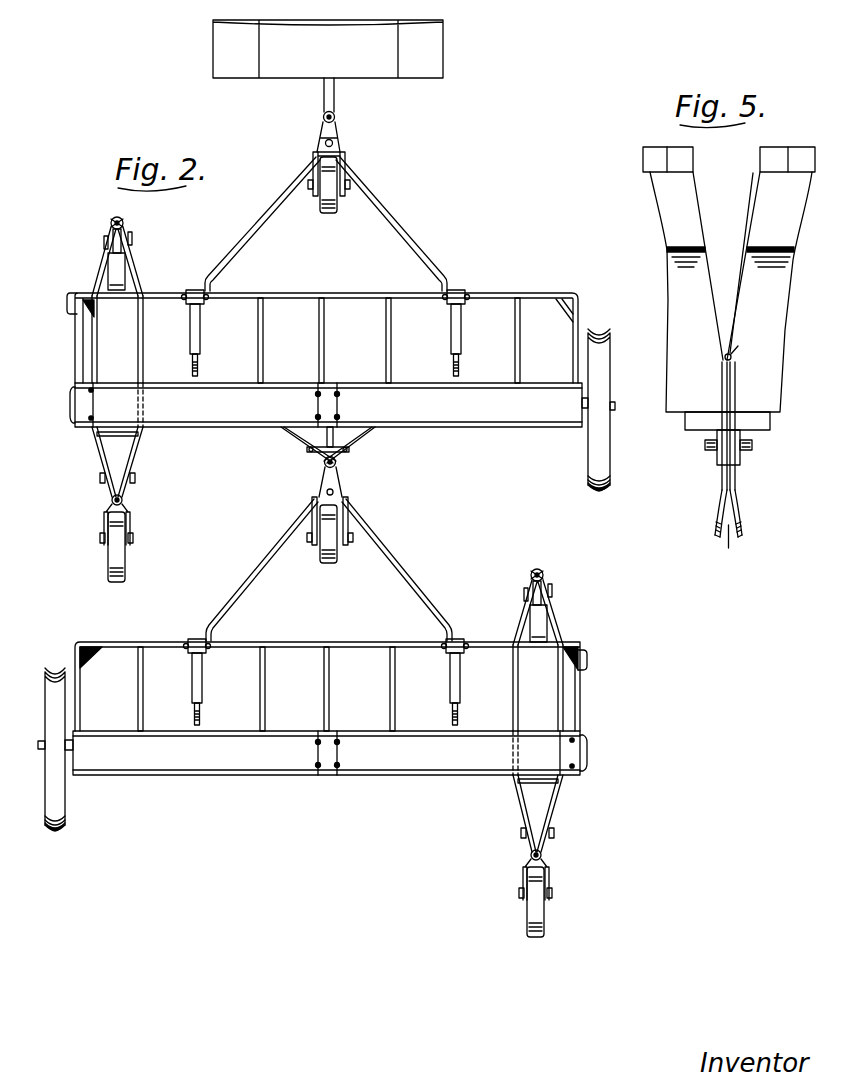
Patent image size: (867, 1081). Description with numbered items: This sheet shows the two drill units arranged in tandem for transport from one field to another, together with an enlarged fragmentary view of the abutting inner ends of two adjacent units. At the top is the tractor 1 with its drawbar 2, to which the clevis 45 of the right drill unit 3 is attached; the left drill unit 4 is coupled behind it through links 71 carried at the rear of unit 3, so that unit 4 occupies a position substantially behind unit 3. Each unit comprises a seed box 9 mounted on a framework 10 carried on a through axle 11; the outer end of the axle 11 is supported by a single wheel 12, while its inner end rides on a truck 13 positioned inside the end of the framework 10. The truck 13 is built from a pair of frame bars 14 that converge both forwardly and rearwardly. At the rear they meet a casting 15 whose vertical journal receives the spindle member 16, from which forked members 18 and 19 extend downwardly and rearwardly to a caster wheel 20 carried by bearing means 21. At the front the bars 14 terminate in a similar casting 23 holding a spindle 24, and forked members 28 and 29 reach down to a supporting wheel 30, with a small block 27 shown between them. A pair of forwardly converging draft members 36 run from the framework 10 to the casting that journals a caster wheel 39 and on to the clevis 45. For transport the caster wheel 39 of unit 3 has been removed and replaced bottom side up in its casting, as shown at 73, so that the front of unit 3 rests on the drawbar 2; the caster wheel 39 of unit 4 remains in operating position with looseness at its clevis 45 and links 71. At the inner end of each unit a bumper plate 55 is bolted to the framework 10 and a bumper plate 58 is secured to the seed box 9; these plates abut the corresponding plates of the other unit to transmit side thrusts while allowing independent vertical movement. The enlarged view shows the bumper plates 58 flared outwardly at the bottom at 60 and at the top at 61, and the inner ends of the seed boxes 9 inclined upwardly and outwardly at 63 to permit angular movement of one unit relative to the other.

In FIG. 2, the tractor 1 is at (277, 79).
In FIG. 2, the drawbar 2 is at (323, 90).
In FIG. 2, the right drill unit 3 is at (460, 432).
In FIG. 2, the left drill unit 4 is at (353, 780).
In FIG. 2, the seed box 9 is at (226, 427).
In FIG. 5, the seed box 9 is at (668, 272).
In FIG. 2, the framework 10 is at (508, 299).
In FIG. 2, the through axle 11 is at (589, 402).
In FIG. 2, the single wheel 12 is at (588, 485).
In FIG. 2, the truck 13 is at (141, 278).
In FIG. 2, the frame bars 14 is at (134, 442).
In FIG. 2, the casting 15 is at (130, 486).
In FIG. 2, the spindle member 16 is at (123, 498).
In FIG. 2, the forked member 18 is at (104, 508).
In FIG. 2, the forked member 19 is at (131, 508).
In FIG. 2, the caster wheel 20 is at (126, 578).
In FIG. 2, the bearing means 21 is at (100, 538).
In FIG. 2, the casting 23 is at (125, 222).
In FIG. 2, the spindle 24 is at (111, 224).
In FIG. 2, the upper block 27 is at (327, 417).
In FIG. 2, the forked member 28 is at (104, 241).
In FIG. 2, the forked member 29 is at (133, 239).
In FIG. 2, the supporting wheel 30 is at (108, 275).
In FIG. 2, the draft members 36 is at (248, 238).
In FIG. 2, the caster wheel 39 is at (329, 218).
In FIG. 2, the clevis 45 is at (336, 120).
In FIG. 2, the bumper plate 55 is at (67, 305).
In FIG. 2, the bumper plate 58 is at (70, 406).
In FIG. 5, the bumper plate 58 is at (741, 397).
In FIG. 5, the outwardly flared bottom 60 is at (728, 529).
In FIG. 5, the outwardly flared top 61 is at (732, 356).
In FIG. 5, the inclined inner end 63 is at (746, 266).
In FIG. 2, the links 71 is at (318, 459).
In FIG. 2, the inverted caster wheel 73 is at (349, 159).